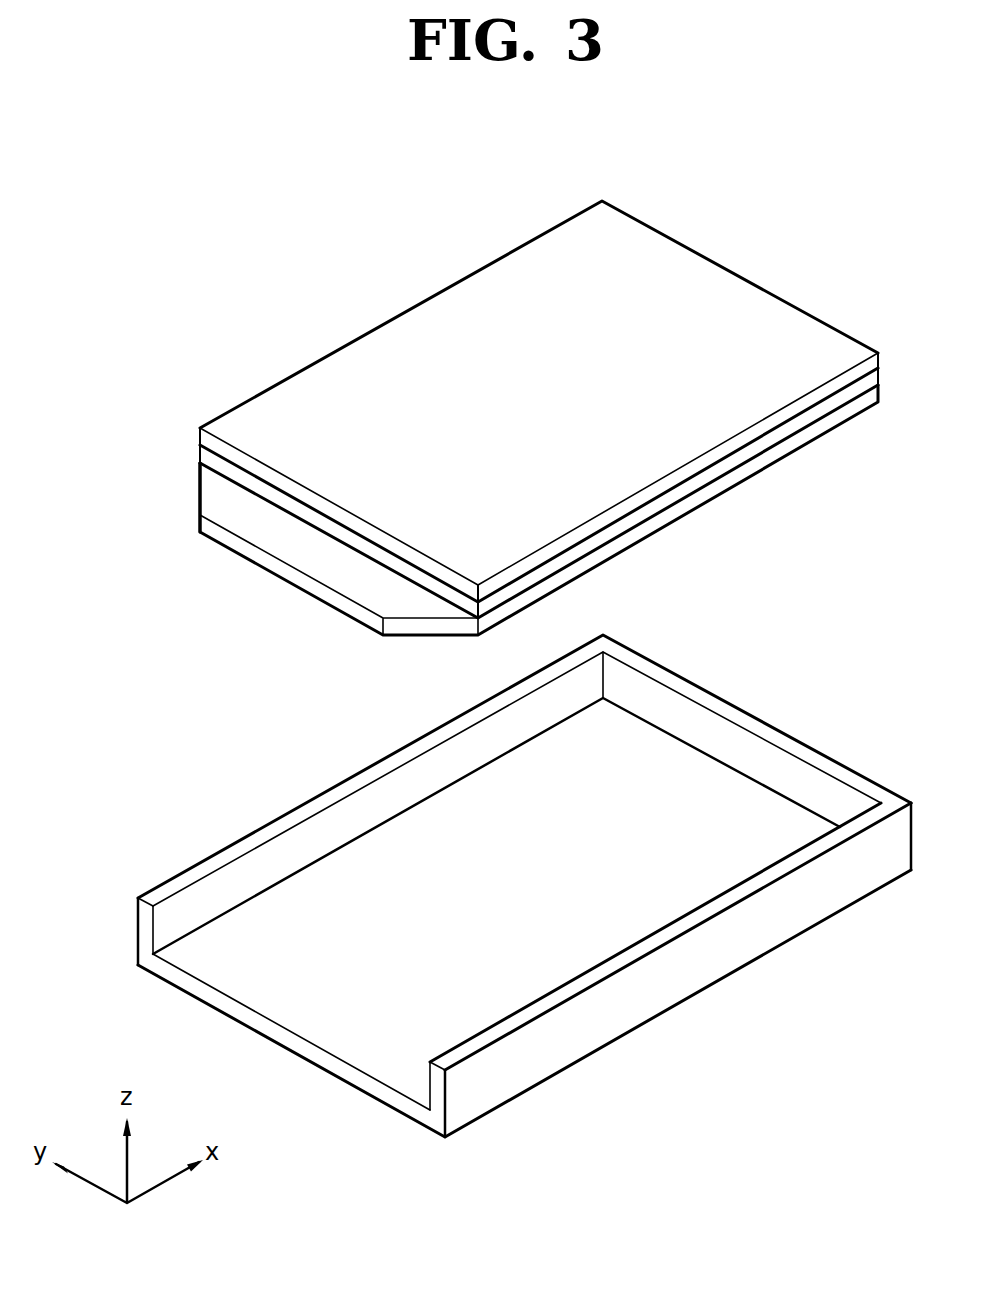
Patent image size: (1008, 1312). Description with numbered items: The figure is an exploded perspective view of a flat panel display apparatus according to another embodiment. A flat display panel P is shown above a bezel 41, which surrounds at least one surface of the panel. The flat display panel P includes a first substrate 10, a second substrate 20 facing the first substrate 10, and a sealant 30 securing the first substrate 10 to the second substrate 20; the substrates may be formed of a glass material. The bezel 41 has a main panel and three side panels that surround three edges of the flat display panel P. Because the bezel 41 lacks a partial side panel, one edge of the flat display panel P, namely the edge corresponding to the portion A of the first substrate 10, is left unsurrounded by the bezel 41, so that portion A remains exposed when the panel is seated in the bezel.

The first substrate 10 is at (653, 525).
The second substrate 20 is at (678, 478).
The sealant 30 is at (728, 467).
The bezel 41 is at (635, 1003).
The flat display panel P is at (782, 268).
The portion of the first substrate A is at (191, 460).